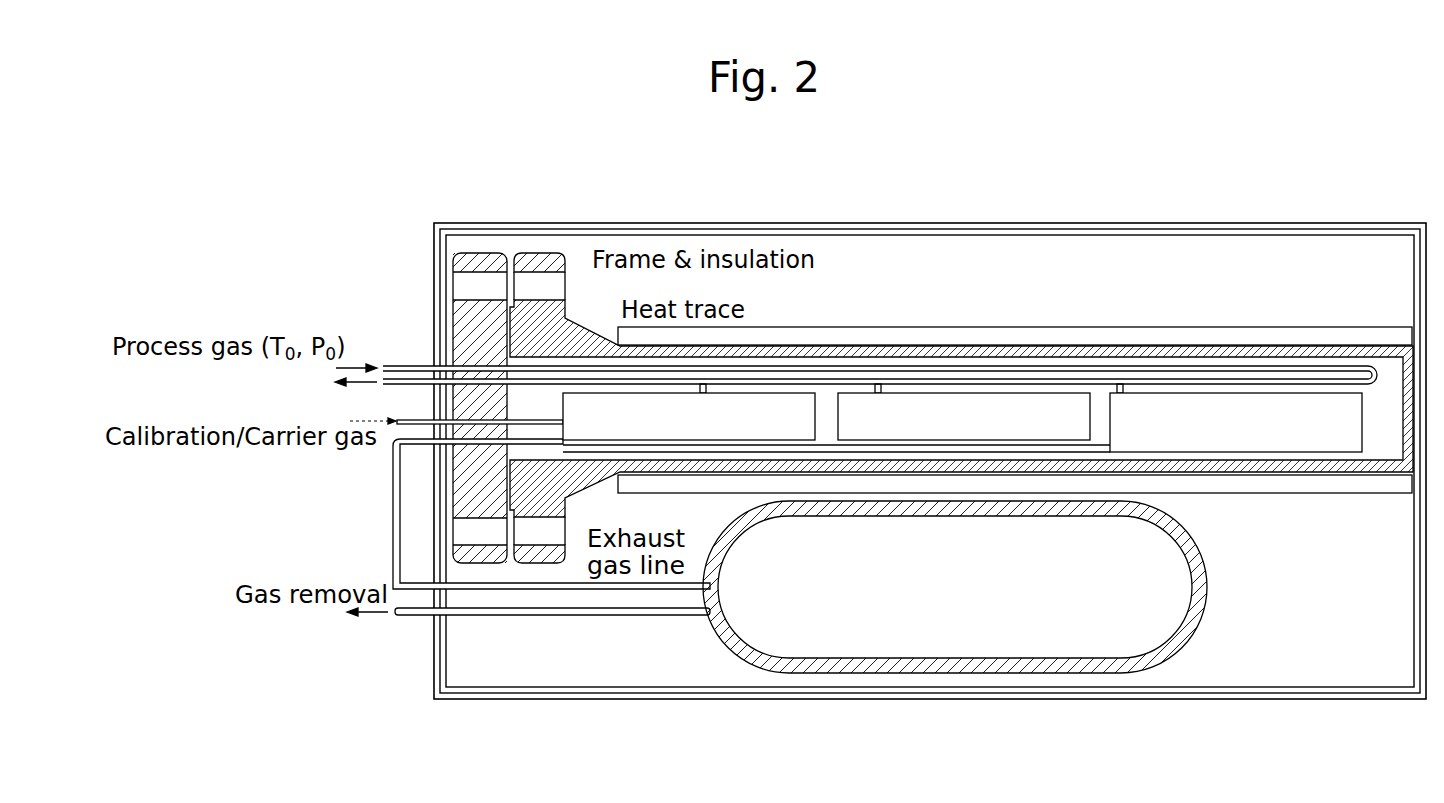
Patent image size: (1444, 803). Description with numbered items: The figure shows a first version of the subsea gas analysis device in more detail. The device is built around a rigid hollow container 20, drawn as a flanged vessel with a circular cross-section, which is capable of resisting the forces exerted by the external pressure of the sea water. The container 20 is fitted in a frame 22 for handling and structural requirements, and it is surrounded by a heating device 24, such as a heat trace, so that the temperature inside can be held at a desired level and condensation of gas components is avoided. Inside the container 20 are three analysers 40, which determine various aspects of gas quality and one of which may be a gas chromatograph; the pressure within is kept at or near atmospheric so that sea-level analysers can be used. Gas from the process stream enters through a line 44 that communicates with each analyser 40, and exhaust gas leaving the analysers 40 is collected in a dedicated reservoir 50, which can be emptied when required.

The container 20 is at (1341, 472).
The frame 22 is at (1393, 223).
The heating device 24 is at (1283, 333).
The analysers 40 is at (788, 410).
The line 44 is at (1040, 384).
The reservoir 50 is at (937, 673).